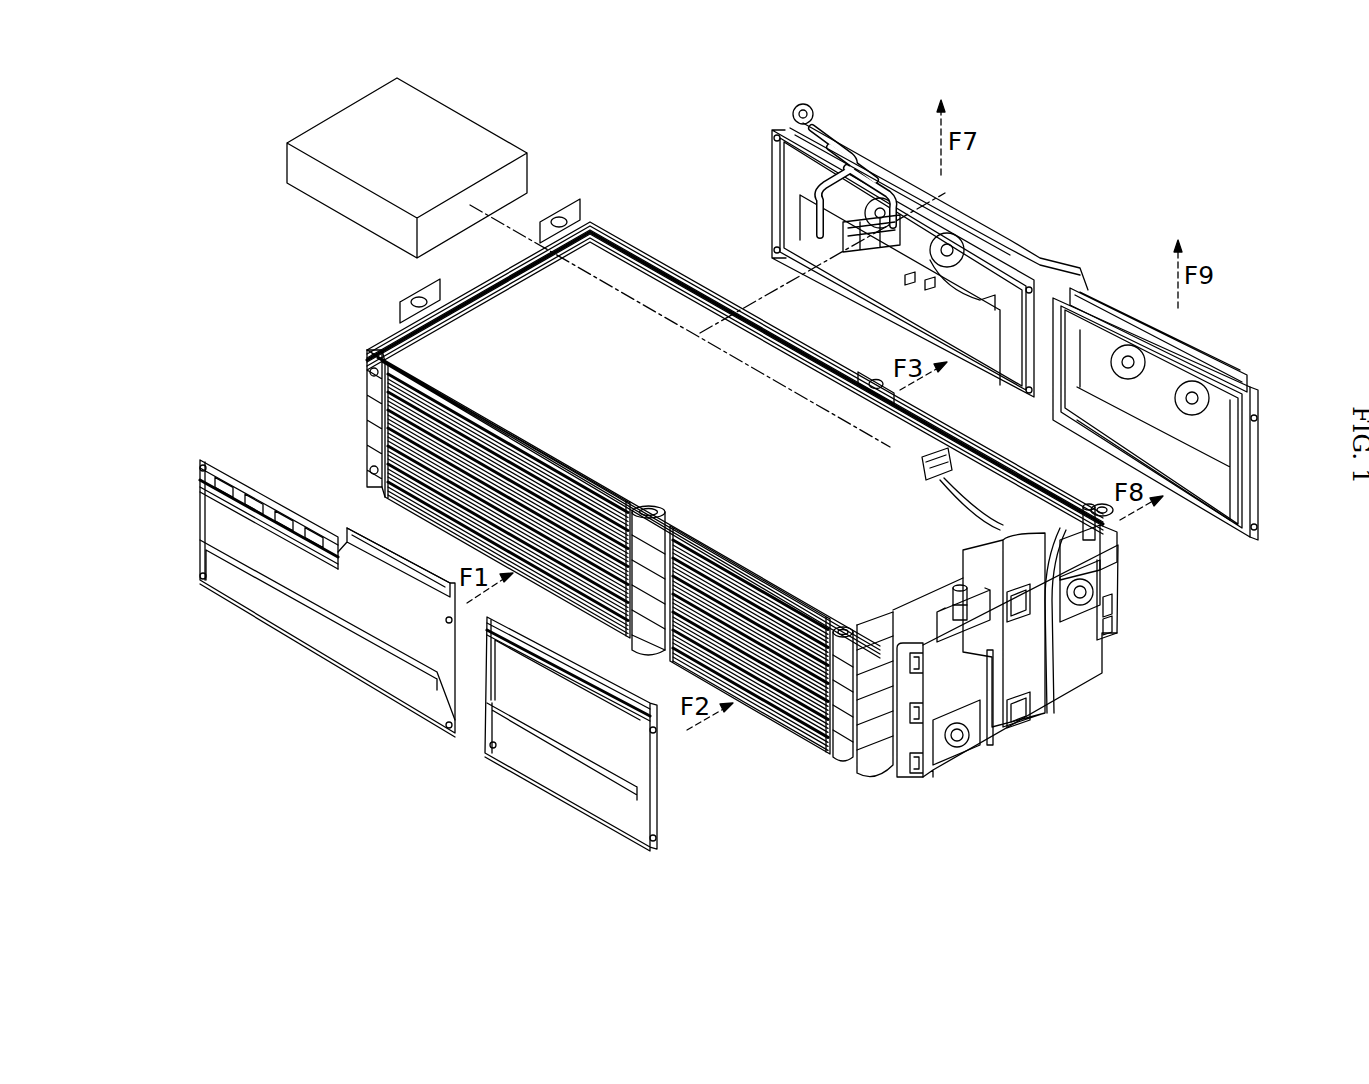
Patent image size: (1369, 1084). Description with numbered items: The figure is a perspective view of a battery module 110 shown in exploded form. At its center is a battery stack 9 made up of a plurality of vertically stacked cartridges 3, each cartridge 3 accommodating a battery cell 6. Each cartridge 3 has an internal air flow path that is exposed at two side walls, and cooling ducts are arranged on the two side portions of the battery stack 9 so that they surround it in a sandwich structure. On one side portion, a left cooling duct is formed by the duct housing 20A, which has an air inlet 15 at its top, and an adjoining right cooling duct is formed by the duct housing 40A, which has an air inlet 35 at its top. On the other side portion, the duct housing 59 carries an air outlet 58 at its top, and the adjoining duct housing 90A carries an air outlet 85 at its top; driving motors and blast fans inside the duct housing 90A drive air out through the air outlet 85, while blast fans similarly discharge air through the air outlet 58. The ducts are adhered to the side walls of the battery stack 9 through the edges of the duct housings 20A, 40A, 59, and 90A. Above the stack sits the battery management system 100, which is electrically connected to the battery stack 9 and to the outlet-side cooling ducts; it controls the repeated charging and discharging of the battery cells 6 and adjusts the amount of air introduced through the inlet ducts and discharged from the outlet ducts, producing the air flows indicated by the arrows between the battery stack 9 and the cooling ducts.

The battery module 110 is at (738, 71).
The battery management system 100 is at (455, 130).
The cartridge 3 is at (373, 383).
The battery cell 6 is at (842, 590).
The battery stack 9 is at (1047, 743).
The duct housing 20A is at (252, 600).
The air inlet 15 is at (383, 560).
The duct housing 40A is at (598, 800).
The air inlet 35 is at (560, 667).
The duct housing 59 is at (772, 162).
The air outlet 58 is at (980, 200).
The duct housing 90A is at (1257, 497).
The air outlet 85 is at (1227, 355).